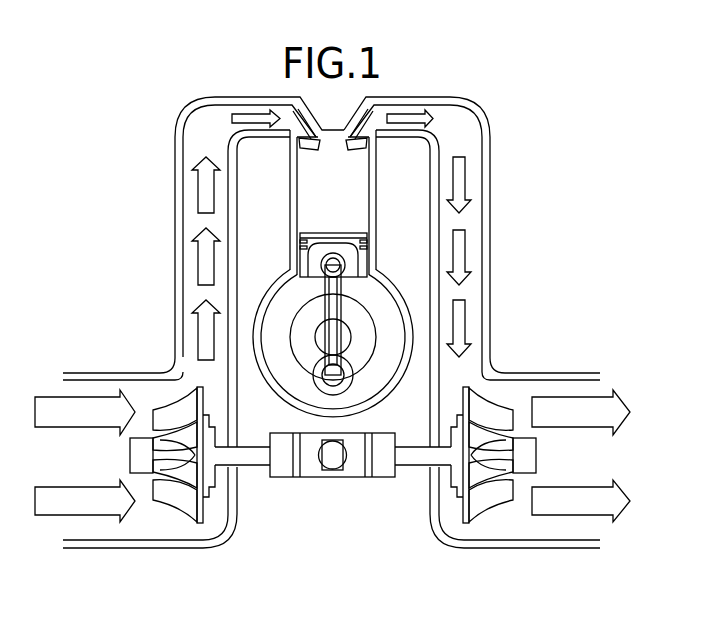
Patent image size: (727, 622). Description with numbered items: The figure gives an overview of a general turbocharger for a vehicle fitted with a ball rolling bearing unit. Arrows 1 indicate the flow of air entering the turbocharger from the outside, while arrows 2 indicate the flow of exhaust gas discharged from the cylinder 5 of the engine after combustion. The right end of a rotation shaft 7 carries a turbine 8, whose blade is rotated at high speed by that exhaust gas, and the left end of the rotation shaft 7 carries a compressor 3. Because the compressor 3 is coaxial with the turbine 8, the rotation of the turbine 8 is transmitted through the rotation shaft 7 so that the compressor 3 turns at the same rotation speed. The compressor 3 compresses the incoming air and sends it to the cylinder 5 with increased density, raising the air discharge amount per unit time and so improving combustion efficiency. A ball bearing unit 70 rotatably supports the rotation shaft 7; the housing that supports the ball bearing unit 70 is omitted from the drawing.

The arrows 1 is at (82, 408).
The arrows 2 is at (460, 180).
The compressor 3 is at (183, 497).
The cylinder 5 is at (332, 200).
The rotation shaft 7 is at (415, 458).
The turbine 8 is at (485, 507).
The ball bearing unit 70 is at (363, 460).